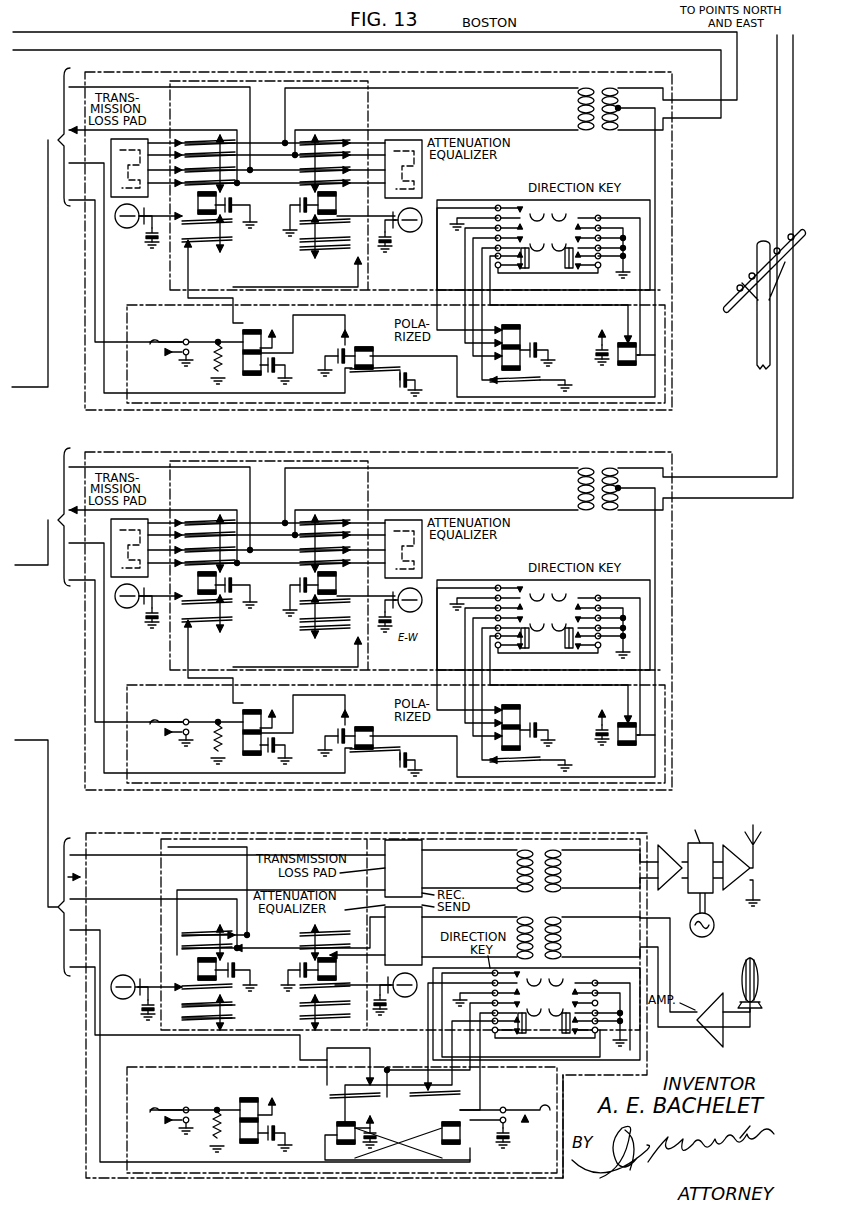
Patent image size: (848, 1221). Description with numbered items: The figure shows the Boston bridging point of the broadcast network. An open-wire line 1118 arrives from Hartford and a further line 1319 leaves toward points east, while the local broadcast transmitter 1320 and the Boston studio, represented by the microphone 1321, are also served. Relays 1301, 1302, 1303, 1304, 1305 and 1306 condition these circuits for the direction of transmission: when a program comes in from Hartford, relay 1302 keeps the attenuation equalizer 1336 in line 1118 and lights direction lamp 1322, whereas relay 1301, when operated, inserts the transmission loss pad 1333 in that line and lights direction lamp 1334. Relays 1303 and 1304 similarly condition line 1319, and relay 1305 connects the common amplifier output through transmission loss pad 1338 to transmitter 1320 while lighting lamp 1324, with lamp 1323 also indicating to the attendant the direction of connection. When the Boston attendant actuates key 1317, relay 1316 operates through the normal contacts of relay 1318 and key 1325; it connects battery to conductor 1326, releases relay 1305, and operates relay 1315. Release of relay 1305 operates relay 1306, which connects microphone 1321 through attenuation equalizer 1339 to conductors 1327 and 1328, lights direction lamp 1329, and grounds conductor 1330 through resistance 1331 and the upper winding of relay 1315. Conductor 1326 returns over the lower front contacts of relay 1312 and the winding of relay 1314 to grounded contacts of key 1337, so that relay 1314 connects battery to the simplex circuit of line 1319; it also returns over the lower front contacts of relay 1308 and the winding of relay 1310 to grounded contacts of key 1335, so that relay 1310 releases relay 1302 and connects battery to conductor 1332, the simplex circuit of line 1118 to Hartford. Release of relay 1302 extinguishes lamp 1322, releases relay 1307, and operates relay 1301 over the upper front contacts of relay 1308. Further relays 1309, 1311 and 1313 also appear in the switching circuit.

The line 1118 is at (728, 62).
The relay 1301 is at (198, 208).
The relay 1302 is at (337, 200).
The relay 1303 is at (198, 588).
The relay 1304 is at (337, 580).
The relay 1305 is at (198, 964).
The relay 1306 is at (318, 960).
The relay 1307 is at (243, 335).
The relay 1308 is at (355, 352).
The polarized relay 1309 is at (512, 362).
The relay 1310 is at (637, 357).
The polarized relay 1311 is at (243, 715).
The relay 1312 is at (355, 732).
The polarized relay 1313 is at (512, 742).
The relay 1314 is at (622, 735).
The relay 1315 is at (240, 1104).
The relay 1316 is at (352, 1112).
The key 1317 is at (507, 1130).
The relay 1318 is at (442, 1133).
The line 1319 is at (737, 490).
The broadcast station transmitter 1320 is at (705, 866).
The microphone 1321 is at (750, 958).
The direction lamp 1322 is at (412, 232).
The lamp 1323 is at (115, 598).
The lamp 1324 is at (110, 989).
The key 1325 is at (560, 968).
The conductor 1326 is at (103, 1047).
The conductor 1327 is at (137, 857).
The conductor 1328 is at (135, 898).
The direction lamp 1329 is at (415, 1000).
The conductor 1330 is at (100, 1010).
The resistance 1331 is at (214, 1130).
The conductor 1332 is at (655, 148).
The transmission loss pad 1333 is at (150, 145).
The direction lamp 1334 is at (120, 228).
The key 1335 is at (535, 200).
The attenuation equalizer 1336 is at (422, 185).
The key 1337 is at (525, 588).
The transmission loss pad 1338 is at (422, 872).
The attenuation equalizer 1339 is at (422, 920).